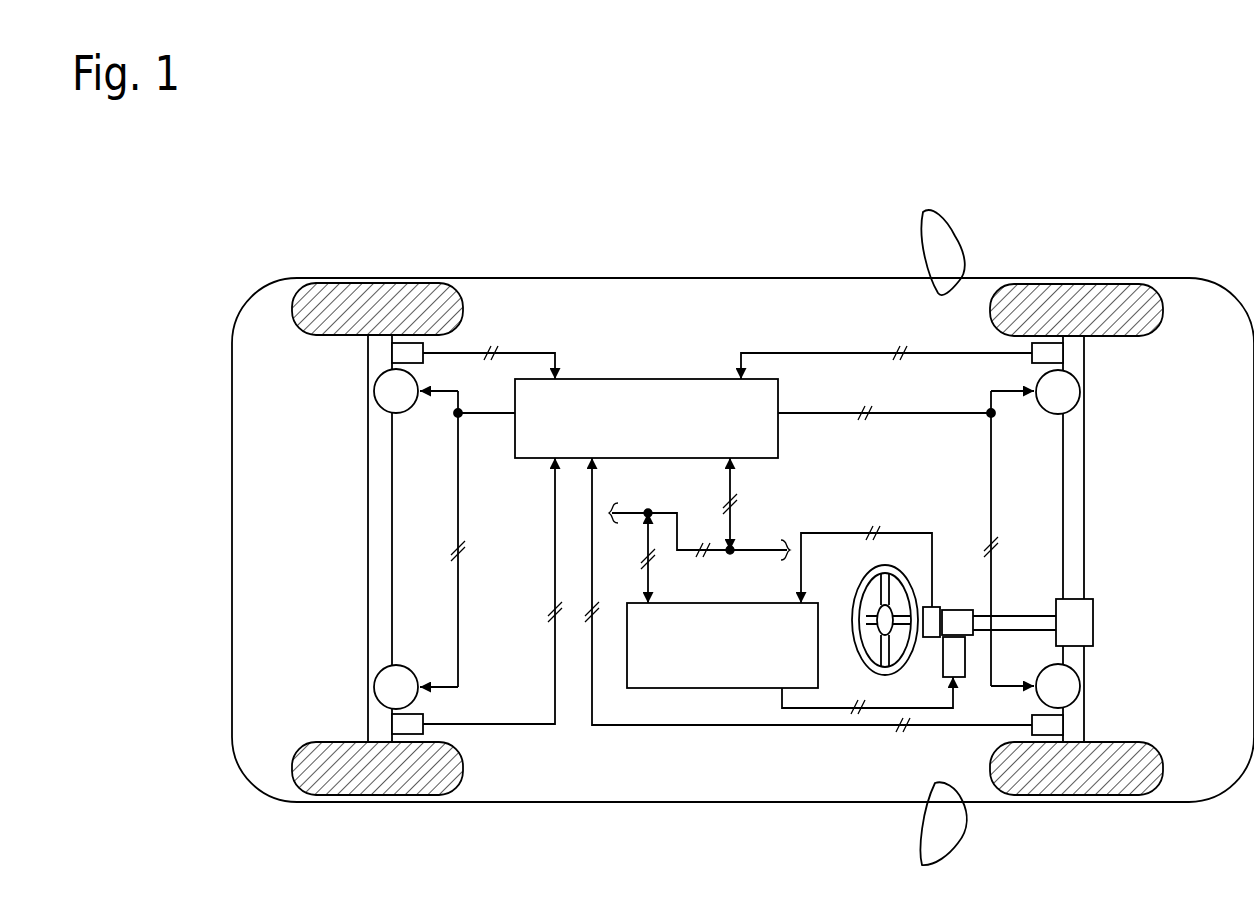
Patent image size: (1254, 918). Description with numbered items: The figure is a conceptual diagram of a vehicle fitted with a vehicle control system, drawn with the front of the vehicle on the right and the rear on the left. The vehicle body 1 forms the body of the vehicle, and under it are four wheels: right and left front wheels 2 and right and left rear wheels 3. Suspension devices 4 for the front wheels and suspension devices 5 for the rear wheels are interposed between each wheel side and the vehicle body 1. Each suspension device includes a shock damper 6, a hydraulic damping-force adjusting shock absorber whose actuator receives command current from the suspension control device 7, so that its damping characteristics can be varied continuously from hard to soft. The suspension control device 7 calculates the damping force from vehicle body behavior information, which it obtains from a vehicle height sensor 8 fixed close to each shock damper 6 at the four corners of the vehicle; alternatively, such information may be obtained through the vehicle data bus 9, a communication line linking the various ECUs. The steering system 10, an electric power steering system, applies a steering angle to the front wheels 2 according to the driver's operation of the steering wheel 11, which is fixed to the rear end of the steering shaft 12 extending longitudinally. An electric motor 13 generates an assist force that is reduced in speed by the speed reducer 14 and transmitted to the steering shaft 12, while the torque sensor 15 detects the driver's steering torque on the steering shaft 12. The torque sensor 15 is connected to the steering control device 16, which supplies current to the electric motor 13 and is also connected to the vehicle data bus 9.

The vehicle body 1 is at (803, 278).
The front wheel 2 is at (1075, 300).
The rear wheel 3 is at (381, 300).
The suspension device 4 is at (1086, 382).
The suspension device 5 is at (372, 416).
The shock damper 6 is at (395, 391).
The suspension control device 7 is at (618, 378).
The vehicle height sensor 8 is at (410, 353).
The vehicle data bus 9 is at (777, 546).
The steering system 10 is at (955, 603).
The steering wheel 11 is at (850, 625).
The steering shaft 12 is at (1025, 624).
The electric motor 13 is at (958, 660).
The speed reducer 14 is at (958, 620).
The torque sensor 15 is at (935, 625).
The steering control device 16 is at (702, 603).